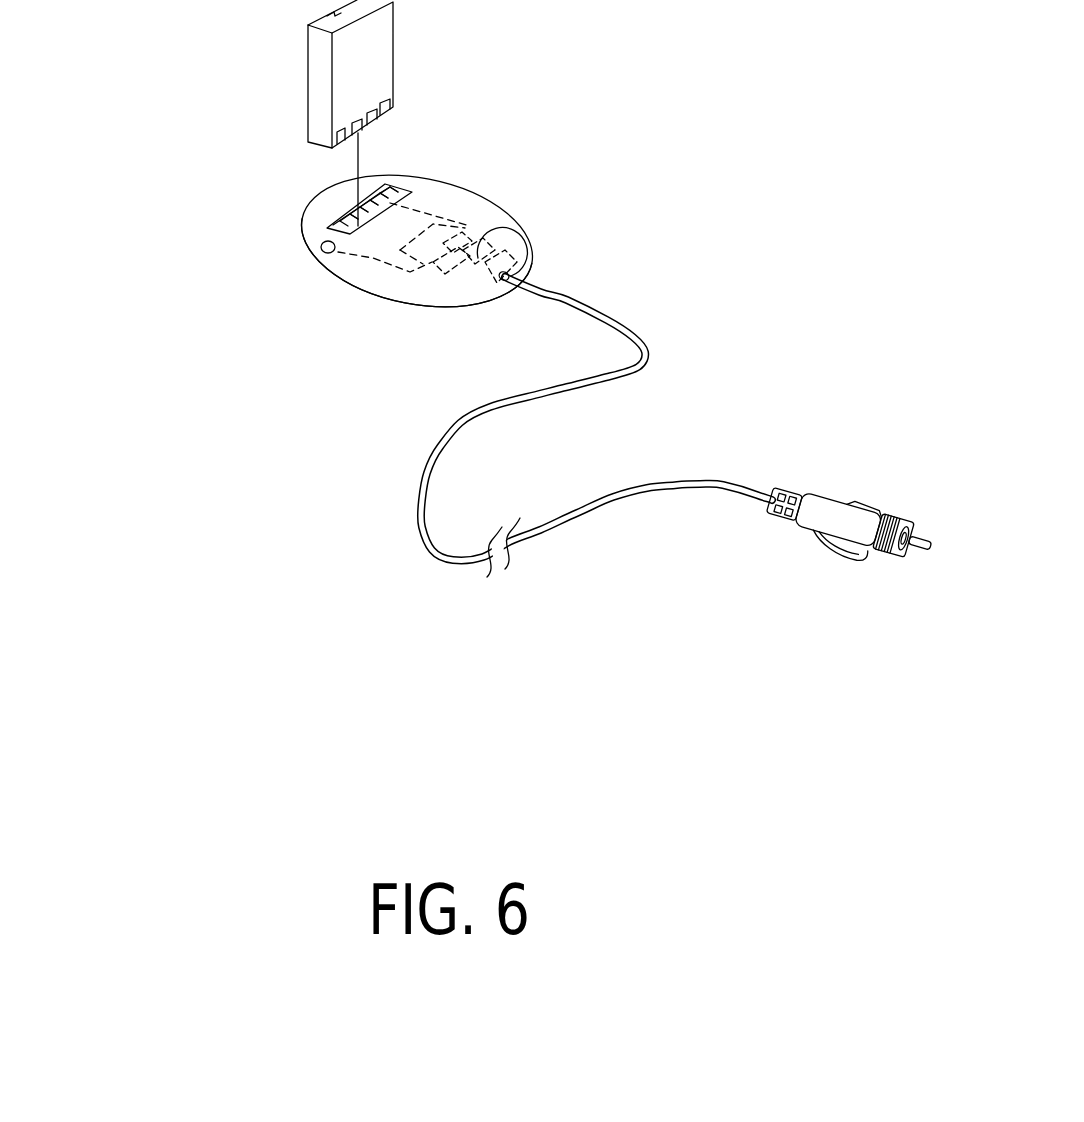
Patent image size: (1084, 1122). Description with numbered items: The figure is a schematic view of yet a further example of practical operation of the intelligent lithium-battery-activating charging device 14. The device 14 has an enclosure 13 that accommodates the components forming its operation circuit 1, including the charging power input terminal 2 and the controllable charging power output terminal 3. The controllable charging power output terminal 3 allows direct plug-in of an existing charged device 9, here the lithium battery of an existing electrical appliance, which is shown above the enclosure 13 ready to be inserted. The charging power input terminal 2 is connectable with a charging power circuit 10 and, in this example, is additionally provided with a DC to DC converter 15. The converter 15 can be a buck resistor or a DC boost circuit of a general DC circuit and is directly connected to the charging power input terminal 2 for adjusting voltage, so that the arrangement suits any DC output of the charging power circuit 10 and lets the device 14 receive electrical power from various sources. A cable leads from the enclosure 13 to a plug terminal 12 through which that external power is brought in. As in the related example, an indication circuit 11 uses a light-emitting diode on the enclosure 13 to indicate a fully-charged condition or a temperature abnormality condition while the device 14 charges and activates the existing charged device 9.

The operation circuit 1 is at (375, 258).
The charging power input terminal 2 is at (487, 223).
The controllable charging power output terminal 3 is at (393, 183).
The existing charged device 9 is at (317, 77).
The charging power circuit 10 is at (523, 258).
The indication circuit 11 is at (325, 249).
The AC male plug terminal 12 is at (806, 532).
The enclosure 13 is at (422, 303).
The intelligent lithium-battery-activating charging device 14 is at (217, 333).
The DC to DC converter 15 is at (490, 229).